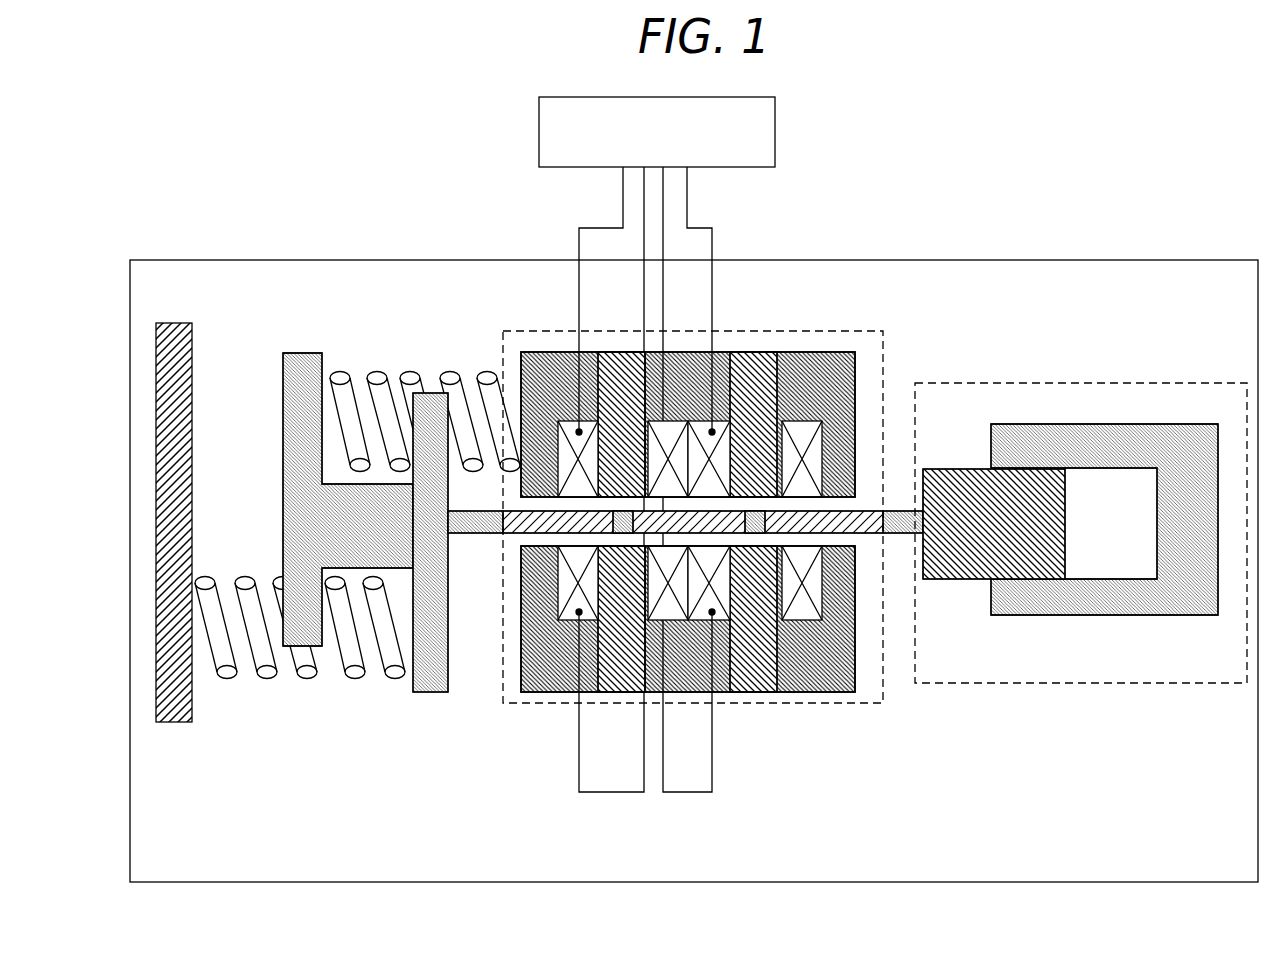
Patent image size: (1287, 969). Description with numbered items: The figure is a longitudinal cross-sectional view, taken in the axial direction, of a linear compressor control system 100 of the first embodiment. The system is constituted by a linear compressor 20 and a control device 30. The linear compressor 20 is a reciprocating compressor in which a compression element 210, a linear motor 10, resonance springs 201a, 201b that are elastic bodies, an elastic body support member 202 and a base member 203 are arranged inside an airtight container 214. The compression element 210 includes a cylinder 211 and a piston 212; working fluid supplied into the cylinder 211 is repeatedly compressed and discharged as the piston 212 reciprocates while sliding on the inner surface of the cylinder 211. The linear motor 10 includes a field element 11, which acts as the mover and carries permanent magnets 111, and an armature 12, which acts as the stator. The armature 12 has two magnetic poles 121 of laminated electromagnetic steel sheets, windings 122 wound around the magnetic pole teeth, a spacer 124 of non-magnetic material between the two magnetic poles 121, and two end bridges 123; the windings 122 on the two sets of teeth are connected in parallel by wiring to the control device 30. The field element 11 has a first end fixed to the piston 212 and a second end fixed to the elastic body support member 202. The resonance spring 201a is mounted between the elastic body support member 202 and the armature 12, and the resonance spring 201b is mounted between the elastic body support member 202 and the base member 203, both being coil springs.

The linear compressor control system 100 is at (939, 178).
The control device 30 is at (776, 134).
The linear compressor 20 is at (1050, 258).
The airtight container 214 is at (1187, 259).
The linear motor 10 is at (832, 332).
The field element 11 is at (691, 460).
The permanent magnet 111 is at (520, 516).
The armature 12 is at (691, 609).
The magnetic pole 121 is at (625, 685).
The winding 122 is at (690, 587).
The end bridge 123 is at (555, 680).
The spacer 124 is at (680, 693).
The resonance spring 201a is at (375, 372).
The resonance spring 201b is at (310, 678).
The elastic body support member 202 is at (432, 694).
The base member 203 is at (172, 722).
The compression element 210 is at (1085, 383).
The cylinder 211 is at (1115, 607).
The piston 212 is at (950, 582).